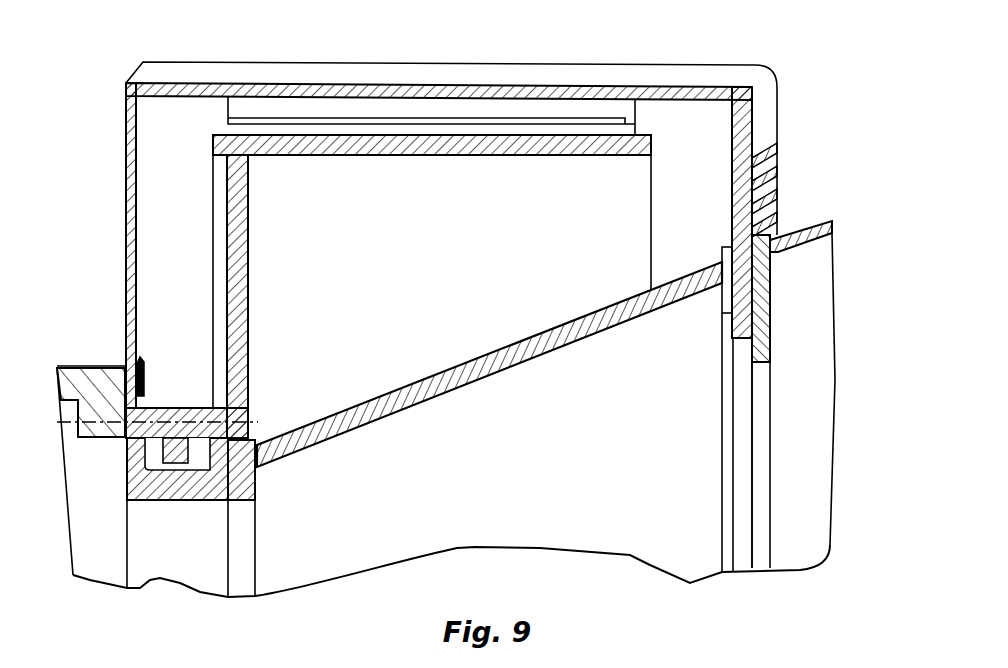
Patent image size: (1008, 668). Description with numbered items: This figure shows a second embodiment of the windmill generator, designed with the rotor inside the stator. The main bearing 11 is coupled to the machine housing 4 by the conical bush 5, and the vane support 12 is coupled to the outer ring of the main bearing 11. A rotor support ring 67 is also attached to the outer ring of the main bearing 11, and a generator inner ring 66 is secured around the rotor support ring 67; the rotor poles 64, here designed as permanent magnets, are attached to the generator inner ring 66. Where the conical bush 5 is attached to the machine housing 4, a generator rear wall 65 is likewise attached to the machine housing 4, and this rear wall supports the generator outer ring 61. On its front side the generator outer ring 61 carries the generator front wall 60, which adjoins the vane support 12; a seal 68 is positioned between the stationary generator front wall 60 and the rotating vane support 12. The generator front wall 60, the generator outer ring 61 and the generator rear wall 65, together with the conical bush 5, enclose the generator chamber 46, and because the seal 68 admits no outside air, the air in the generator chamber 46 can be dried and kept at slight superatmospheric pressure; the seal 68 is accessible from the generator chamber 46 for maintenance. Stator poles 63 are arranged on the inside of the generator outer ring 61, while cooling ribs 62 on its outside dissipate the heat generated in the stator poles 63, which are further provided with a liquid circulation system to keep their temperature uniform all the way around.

The machine housing 4 is at (808, 224).
The conical bush 5 is at (474, 384).
The main bearing 11 is at (126, 490).
The vane support 12 is at (64, 367).
The generator chamber 46 is at (152, 157).
The generator front wall 60 is at (132, 214).
The generator outer ring 61 is at (414, 84).
The cooling ribs 62 is at (483, 80).
The stator poles 63 is at (555, 112).
The rotor poles 64 is at (632, 126).
The generator rear wall 65 is at (752, 122).
The generator inner ring 66 is at (591, 156).
The rotor support ring 67 is at (249, 286).
The seal 68 is at (144, 378).